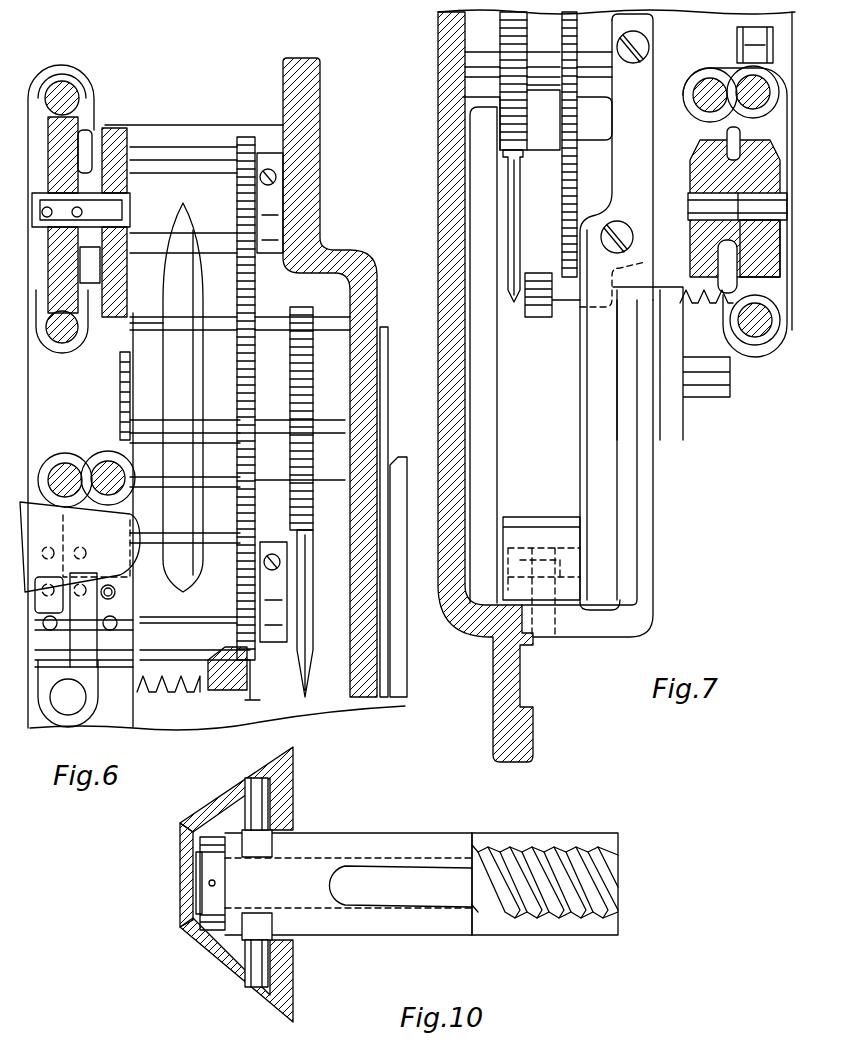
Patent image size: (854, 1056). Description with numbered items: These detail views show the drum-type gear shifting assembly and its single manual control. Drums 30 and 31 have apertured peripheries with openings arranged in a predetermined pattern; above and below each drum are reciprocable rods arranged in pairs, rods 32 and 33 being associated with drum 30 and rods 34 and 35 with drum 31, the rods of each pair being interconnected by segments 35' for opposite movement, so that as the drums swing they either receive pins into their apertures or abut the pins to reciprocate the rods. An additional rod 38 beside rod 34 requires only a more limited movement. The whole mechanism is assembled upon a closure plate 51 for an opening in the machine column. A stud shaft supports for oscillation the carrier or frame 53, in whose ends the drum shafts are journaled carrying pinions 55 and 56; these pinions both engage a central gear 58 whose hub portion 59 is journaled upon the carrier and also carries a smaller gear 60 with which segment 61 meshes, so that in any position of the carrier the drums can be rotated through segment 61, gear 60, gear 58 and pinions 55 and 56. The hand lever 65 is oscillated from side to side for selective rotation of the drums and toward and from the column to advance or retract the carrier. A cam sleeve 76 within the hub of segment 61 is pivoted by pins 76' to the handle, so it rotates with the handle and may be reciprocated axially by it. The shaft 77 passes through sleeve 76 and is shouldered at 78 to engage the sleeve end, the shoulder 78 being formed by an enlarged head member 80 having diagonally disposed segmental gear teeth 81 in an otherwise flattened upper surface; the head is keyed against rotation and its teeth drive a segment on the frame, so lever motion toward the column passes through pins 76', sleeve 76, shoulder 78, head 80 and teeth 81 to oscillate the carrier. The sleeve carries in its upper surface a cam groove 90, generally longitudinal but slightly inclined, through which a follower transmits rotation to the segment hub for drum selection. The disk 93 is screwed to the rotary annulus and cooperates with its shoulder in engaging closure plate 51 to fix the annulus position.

In FIG. 6, the drum 30 is at (80, 295).
In FIG. 7, the drum 30 is at (700, 283).
In FIG. 6, the drum 31 is at (118, 650).
In FIG. 6, the reciprocable rod 32 is at (77, 94).
In FIG. 6, the reciprocable rod 33 is at (72, 335).
In FIG. 6, the reciprocable rod 34 is at (53, 465).
In FIG. 7, the reciprocable rod 34 is at (743, 80).
In FIG. 6, the reciprocable rod 35 is at (84, 663).
In FIG. 7, the reciprocable rod 35 is at (755, 343).
In FIG. 6, the segment 35' is at (95, 209).
In FIG. 7, the segment 35' is at (766, 320).
In FIG. 6, the additional rod 38 is at (112, 462).
In FIG. 7, the additional rod 38 is at (695, 110).
In FIG. 7, the closure plate 51 is at (498, 725).
In FIG. 6, the carrier or frame 53 is at (191, 162).
In FIG. 6, the pinion 55 is at (247, 137).
In FIG. 6, the pinion 56 is at (252, 662).
In FIG. 7, the pinion 56 is at (563, 237).
In FIG. 6, the central gear 58 is at (255, 310).
In FIG. 7, the central gear 58 is at (577, 135).
In FIG. 6, the hub portion 59 is at (267, 332).
In FIG. 7, the hub portion 59 is at (553, 80).
In FIG. 6, the smaller gear 60 is at (320, 308).
In FIG. 7, the smaller gear 60 is at (525, 85).
In FIG. 6, the segment 61 is at (298, 517).
In FIG. 7, the segment 61 is at (523, 147).
In FIG. 10, the hand lever 65 is at (235, 967).
In FIG. 10, the cam sleeve 76 is at (348, 873).
In FIG. 10, the pins 76' is at (289, 885).
In FIG. 10, the shaft 77 is at (403, 858).
In FIG. 10, the shoulder 78 is at (472, 925).
In FIG. 10, the head member 80 is at (564, 872).
In FIG. 10, the segmental gear teeth 81 is at (605, 885).
In FIG. 10, the cam groove 90 is at (405, 913).
In FIG. 7, the disk 93 is at (470, 133).